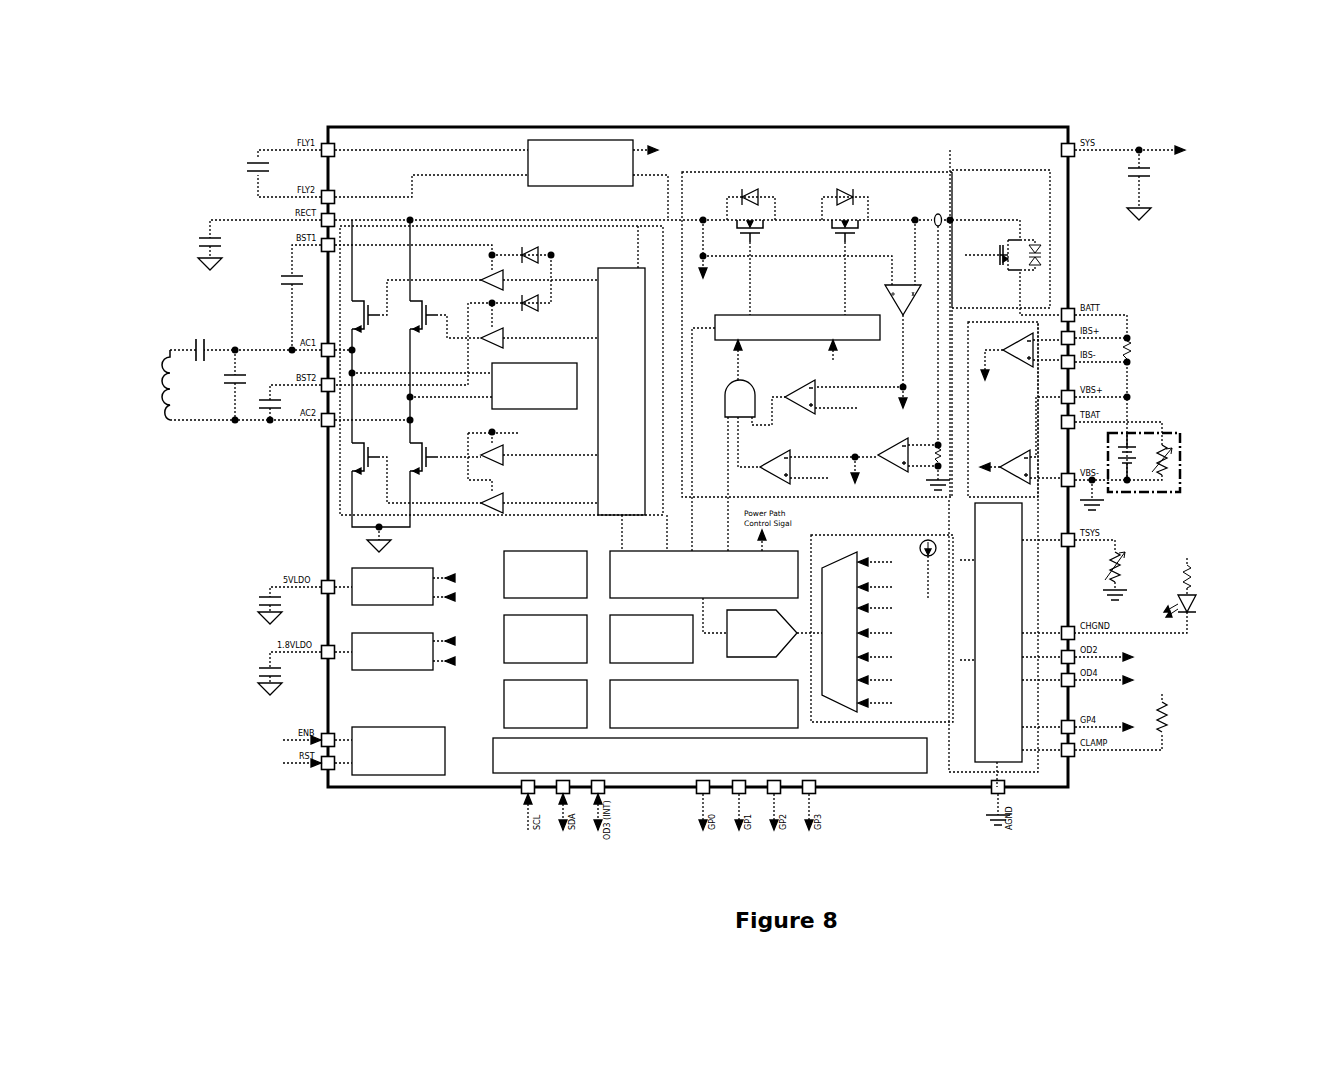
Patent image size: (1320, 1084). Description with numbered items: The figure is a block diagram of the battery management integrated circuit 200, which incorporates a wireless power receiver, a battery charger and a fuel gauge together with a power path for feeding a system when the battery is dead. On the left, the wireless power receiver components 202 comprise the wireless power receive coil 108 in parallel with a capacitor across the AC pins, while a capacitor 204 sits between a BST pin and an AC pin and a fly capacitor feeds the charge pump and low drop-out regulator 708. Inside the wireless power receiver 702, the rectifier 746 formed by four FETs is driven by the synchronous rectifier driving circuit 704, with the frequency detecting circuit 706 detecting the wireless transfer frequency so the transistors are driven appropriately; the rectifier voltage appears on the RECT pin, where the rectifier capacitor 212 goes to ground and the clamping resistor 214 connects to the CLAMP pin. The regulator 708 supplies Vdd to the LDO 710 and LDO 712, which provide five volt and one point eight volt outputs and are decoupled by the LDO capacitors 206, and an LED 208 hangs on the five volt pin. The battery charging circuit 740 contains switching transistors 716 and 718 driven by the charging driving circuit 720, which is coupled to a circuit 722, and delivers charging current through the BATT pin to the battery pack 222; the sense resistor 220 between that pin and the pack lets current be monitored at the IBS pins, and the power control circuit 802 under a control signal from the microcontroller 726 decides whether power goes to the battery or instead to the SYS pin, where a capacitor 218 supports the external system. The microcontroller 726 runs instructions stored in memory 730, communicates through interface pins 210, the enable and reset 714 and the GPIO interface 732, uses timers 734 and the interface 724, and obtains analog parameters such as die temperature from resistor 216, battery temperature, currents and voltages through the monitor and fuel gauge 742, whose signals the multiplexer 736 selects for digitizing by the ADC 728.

The wireless power receive coil 108 is at (168, 410).
The battery management integrated circuit 200 is at (921, 158).
The wireless power receiver components 202 is at (283, 352).
The capacitor 204 is at (250, 166).
The LDO capacitors 206 is at (268, 625).
The LED 208 is at (1200, 604).
The interface pins 210 is at (300, 757).
The rectifier capacitor 212 is at (205, 240).
The clamping resistor 214 is at (1195, 716).
The resistor 216 is at (1124, 560).
The capacitor 218 is at (1153, 172).
The sense resistor 220 is at (1160, 367).
The battery pack 222 is at (1209, 557).
The wireless power receiver 702 is at (499, 385).
The synchronous rectifier driving circuit 704 is at (626, 388).
The frequency detecting circuit 706 is at (548, 400).
The charge pump and low drop-out regulator 708 is at (610, 140).
The LDO 710 is at (420, 596).
The LDO 712 is at (408, 662).
The enable and reset 714 is at (377, 727).
The switching transistor 716 is at (745, 196).
The switching transistor 718 is at (845, 196).
The charging driving circuit 720 is at (812, 326).
The circuit 722 is at (850, 425).
The interface 724 is at (680, 572).
The microcontroller 726 is at (775, 700).
The ADC 728 is at (774, 646).
The memory 730 is at (523, 647).
The GPIO interface 732 is at (548, 551).
The timers 734 is at (674, 648).
The multiplexer 736 is at (857, 553).
The battery charging circuit 740 is at (677, 348).
The monitor and fuel gauge 742 is at (1007, 433).
The rectifier 746 is at (418, 440).
The power control circuit 802 is at (1010, 240).